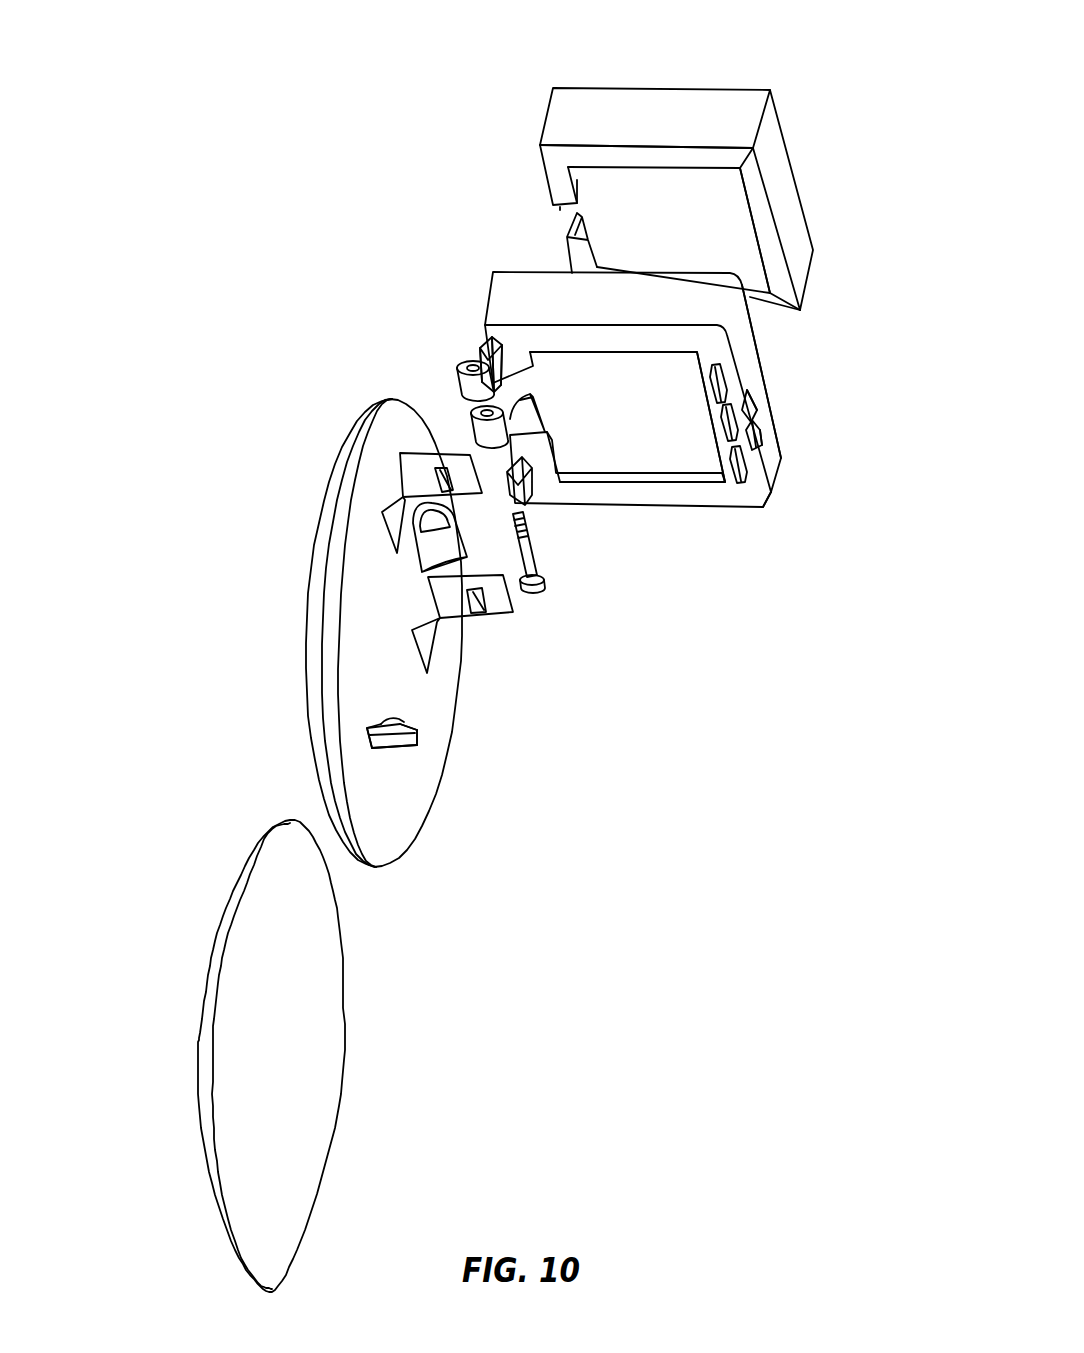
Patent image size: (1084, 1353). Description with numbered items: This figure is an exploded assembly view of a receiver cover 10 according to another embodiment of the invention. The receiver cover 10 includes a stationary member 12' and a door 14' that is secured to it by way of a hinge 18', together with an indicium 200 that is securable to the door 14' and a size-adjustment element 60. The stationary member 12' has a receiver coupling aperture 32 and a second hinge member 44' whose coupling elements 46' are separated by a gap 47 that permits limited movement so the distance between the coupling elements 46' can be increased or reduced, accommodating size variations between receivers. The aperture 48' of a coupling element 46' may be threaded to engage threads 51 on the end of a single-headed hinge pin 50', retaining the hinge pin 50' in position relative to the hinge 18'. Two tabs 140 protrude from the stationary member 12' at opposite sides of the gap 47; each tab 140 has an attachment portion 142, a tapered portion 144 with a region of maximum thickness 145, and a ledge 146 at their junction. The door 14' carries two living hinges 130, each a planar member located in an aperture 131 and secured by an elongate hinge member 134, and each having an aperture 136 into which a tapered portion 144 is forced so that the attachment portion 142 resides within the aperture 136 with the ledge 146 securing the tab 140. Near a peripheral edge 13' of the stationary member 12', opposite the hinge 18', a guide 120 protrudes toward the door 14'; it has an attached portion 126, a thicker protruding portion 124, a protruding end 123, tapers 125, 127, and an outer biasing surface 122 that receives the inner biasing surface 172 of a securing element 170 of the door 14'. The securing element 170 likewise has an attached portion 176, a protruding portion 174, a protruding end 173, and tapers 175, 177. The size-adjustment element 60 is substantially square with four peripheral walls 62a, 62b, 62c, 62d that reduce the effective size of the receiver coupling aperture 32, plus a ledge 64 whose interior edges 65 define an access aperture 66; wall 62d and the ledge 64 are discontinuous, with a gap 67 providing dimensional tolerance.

The receiver cover 10 is at (862, 105).
The stationary member 12' is at (608, 388).
The peripheral edge 13' is at (802, 371).
The door 14' is at (358, 589).
The hinge 18' is at (375, 589).
The receiver coupling aperture 32 is at (627, 417).
The second hinge member 44' is at (557, 508).
The coupling elements 46' is at (553, 398).
The gap 47 is at (462, 410).
The aperture 48' is at (455, 368).
The hinge pin 50' is at (564, 590).
The threads 51 is at (530, 548).
The size-adjustment element 60 is at (535, 112).
The peripheral wall 62a is at (647, 266).
The peripheral wall 62b is at (782, 190).
The peripheral wall 62c is at (680, 100).
The peripheral wall 62d is at (555, 175).
The ledge 64 is at (620, 160).
The interior edges 65 is at (580, 188).
The access aperture 66 is at (734, 230).
The gap 67 is at (558, 213).
The guide 120 is at (765, 445).
The outer biasing surface 122 is at (762, 440).
The protruding end 123 is at (735, 465).
The protruding portion 124 is at (733, 431).
The taper 125 is at (755, 495).
The attached portion 126 is at (738, 393).
The taper 127 is at (757, 407).
The living hinge 130 is at (378, 482).
The aperture 131 is at (445, 632).
The hinge member 134 is at (357, 420).
The aperture 136 is at (480, 612).
The tab 140 is at (502, 411).
The attachment portion 142 is at (508, 342).
The tapered portion 144 is at (500, 364).
The region of maximum thickness 145 is at (486, 358).
The ledge 146 is at (490, 355).
The securing element 170 is at (381, 779).
The inner biasing surface 172 is at (398, 720).
The protruding end 173 is at (415, 745).
The protruding portion 174 is at (410, 752).
The taper 175 is at (410, 728).
The attached portion 176 is at (372, 750).
The taper 177 is at (385, 722).
The indicium 200 is at (355, 1058).